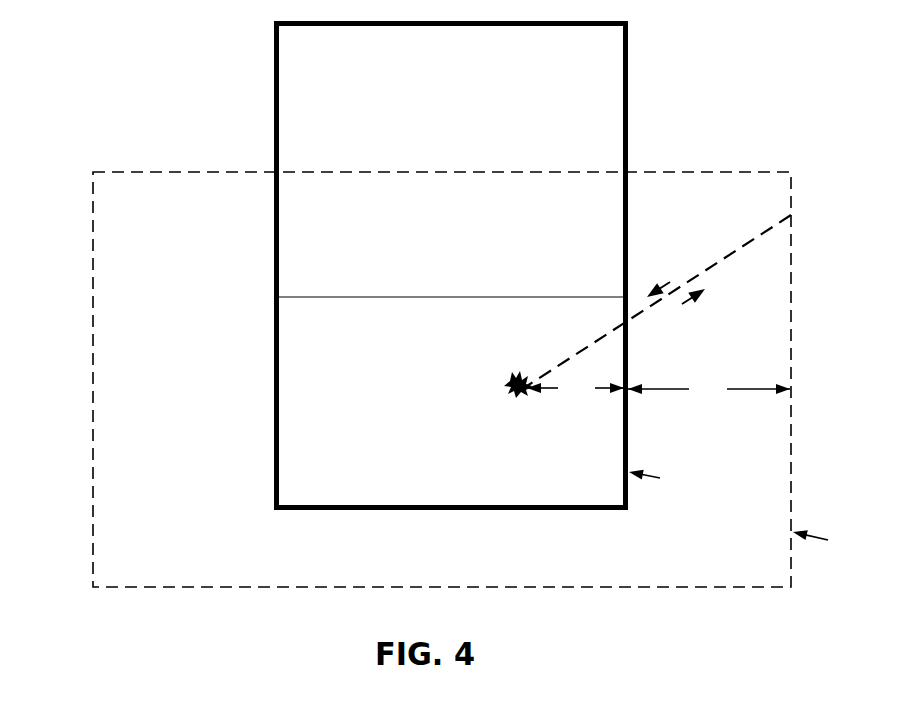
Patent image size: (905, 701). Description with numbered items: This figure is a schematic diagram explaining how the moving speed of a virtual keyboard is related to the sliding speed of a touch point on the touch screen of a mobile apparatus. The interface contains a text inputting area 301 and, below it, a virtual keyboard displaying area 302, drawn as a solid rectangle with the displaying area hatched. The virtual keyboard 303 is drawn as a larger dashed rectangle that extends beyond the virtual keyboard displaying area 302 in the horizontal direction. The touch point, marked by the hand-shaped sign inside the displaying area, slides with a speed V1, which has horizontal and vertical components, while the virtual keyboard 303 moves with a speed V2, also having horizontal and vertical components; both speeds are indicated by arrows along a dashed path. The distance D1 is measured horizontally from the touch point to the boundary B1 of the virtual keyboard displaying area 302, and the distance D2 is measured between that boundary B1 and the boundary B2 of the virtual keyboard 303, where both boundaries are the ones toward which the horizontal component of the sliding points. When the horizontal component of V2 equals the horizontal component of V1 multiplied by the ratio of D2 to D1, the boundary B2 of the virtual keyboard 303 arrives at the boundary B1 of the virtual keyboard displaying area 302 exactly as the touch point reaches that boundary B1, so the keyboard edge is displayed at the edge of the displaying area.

The text inputting area 301 is at (606, 67).
The virtual keyboard displaying area 302 is at (294, 328).
The virtual keyboard 303 is at (93, 196).
The sliding speed of the touch point V1 is at (704, 314).
The moving speed of the virtual keyboard V2 is at (669, 269).
The distance from the touch point to boundary B1 D1 is at (575, 388).
The distance between boundary B1 and boundary B2 D2 is at (709, 388).
The boundary of the virtual keyboard displaying area B1 is at (661, 482).
The boundary of the virtual keyboard B2 is at (826, 542).